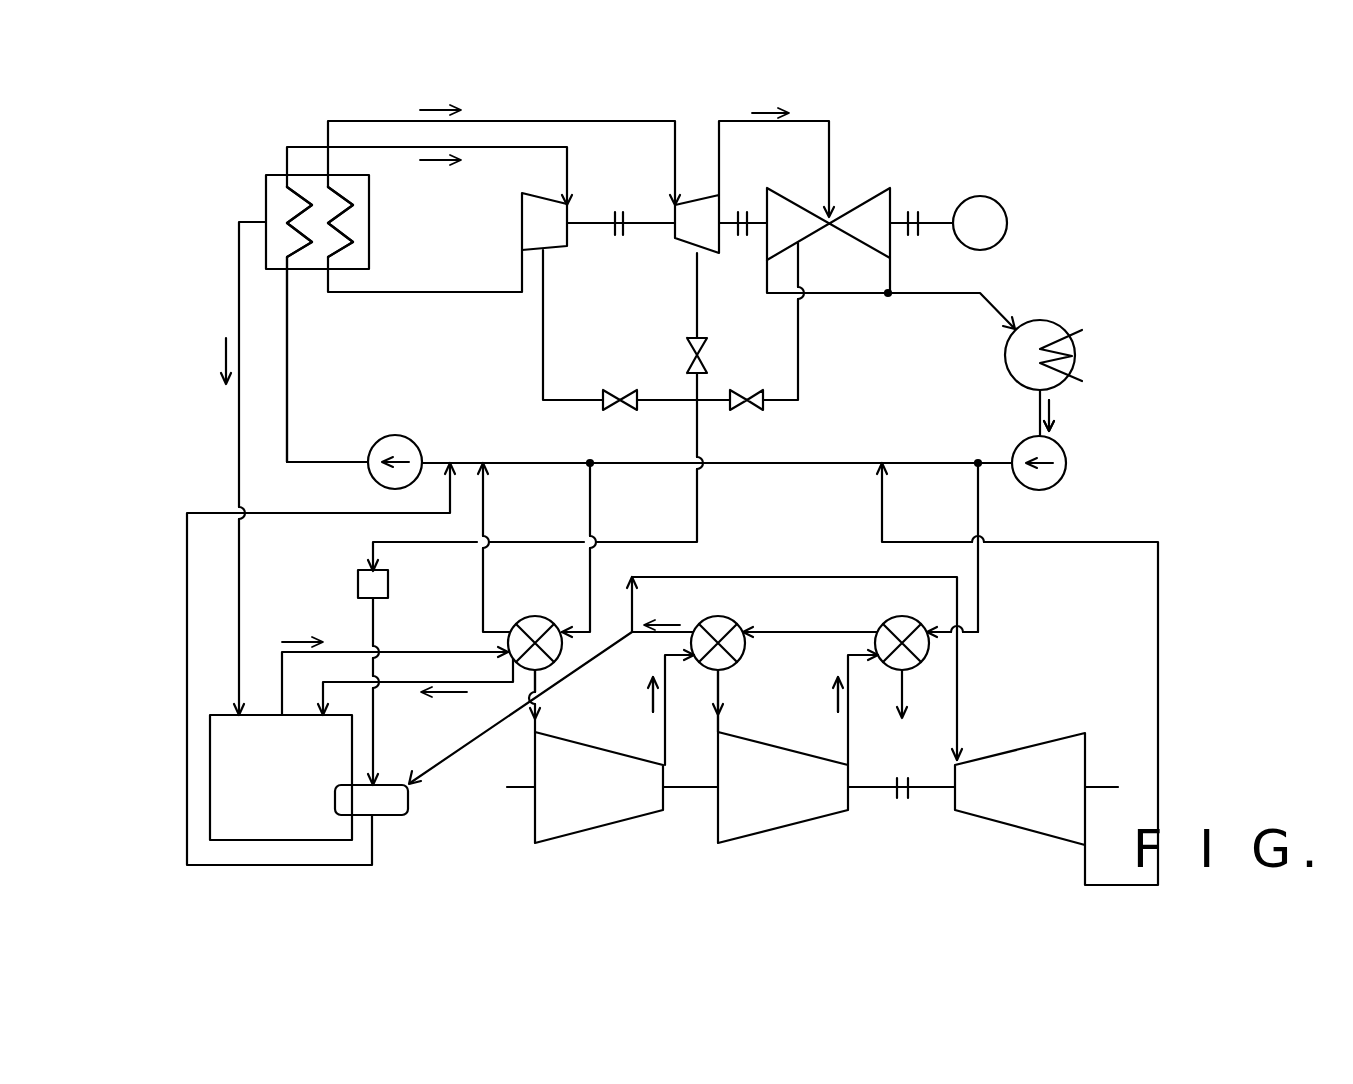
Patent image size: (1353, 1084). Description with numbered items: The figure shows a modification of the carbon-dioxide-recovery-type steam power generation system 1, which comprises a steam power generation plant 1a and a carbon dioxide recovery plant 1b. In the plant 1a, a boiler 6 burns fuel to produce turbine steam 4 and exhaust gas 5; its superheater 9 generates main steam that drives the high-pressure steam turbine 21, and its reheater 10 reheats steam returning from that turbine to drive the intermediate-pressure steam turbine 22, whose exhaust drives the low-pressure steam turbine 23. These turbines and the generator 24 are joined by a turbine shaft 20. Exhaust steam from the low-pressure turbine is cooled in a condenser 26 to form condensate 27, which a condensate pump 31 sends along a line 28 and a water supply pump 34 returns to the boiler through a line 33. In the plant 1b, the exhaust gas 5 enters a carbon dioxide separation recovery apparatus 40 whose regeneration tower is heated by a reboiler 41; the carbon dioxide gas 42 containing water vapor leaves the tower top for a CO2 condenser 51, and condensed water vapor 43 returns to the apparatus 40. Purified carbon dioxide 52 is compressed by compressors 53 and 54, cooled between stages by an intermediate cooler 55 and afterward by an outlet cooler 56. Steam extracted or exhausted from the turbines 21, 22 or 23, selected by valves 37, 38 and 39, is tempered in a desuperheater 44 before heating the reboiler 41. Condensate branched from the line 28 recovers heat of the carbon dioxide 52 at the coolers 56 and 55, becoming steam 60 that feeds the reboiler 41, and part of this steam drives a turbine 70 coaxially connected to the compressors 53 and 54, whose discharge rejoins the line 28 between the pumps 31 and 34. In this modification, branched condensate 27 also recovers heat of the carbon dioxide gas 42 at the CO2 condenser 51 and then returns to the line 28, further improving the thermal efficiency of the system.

The carbon-dioxide-recovery-type steam power generation system 1 is at (1095, 132).
The steam power generation plant 1a is at (165, 284).
The carbon dioxide recovery plant 1b is at (162, 650).
The turbine steam 4 is at (772, 111).
The exhaust gas 5 is at (226, 356).
The boiler 6 is at (262, 190).
The superheater 9 is at (295, 226).
The reheater 10 is at (338, 233).
The turbine shaft 20 is at (591, 226).
The high-pressure steam turbine 21 is at (522, 229).
The intermediate-pressure steam turbine 22 is at (684, 246).
The low-pressure steam turbine 23 is at (861, 200).
The generator 24 is at (977, 196).
The condenser 26 is at (1004, 358).
The condensate 27 is at (1053, 410).
The line 28 is at (927, 461).
The condensate pump 31 is at (1067, 465).
The line 33 is at (322, 461).
The water supply pump 34 is at (395, 435).
The valve 37 is at (612, 410).
The valve 38 is at (690, 352).
The valve 39 is at (735, 410).
The carbon dioxide separation recovery apparatus 40 is at (222, 716).
The reboiler 41 is at (390, 818).
The carbon dioxide gas 42 is at (311, 640).
The water vapor 43 is at (450, 693).
The desuperheater 44 is at (388, 584).
The CO2 condenser 51 is at (522, 617).
The carbon dioxide 52 is at (835, 705).
The compressor 53 is at (603, 831).
The compressor 54 is at (778, 832).
The intermediate cooler 55 is at (740, 622).
The outlet cooler 56 is at (890, 622).
The steam 60 is at (662, 622).
The turbine 70 is at (1020, 835).